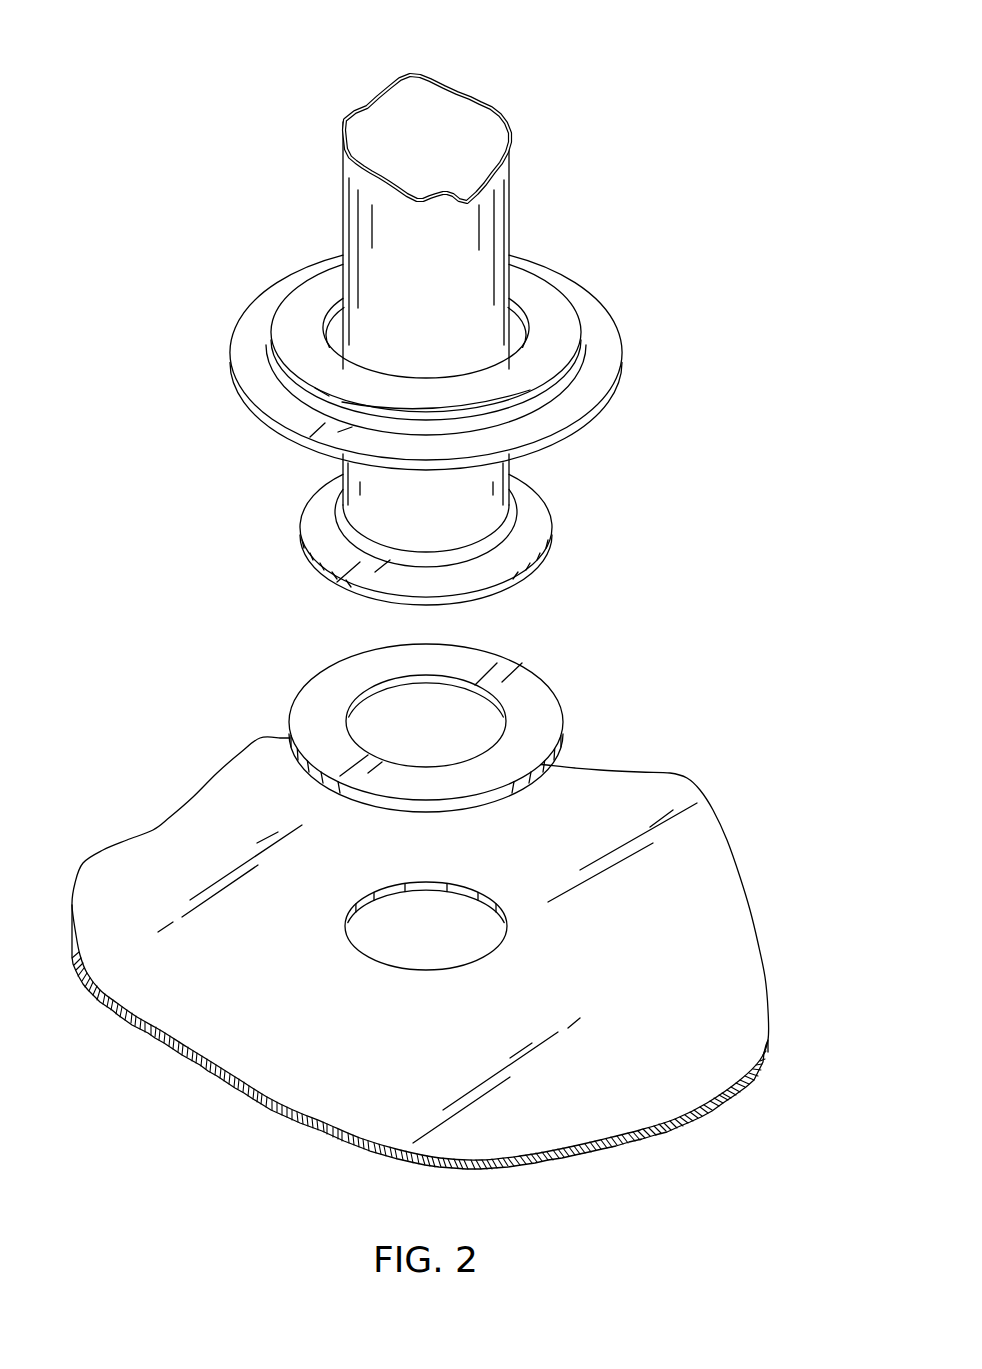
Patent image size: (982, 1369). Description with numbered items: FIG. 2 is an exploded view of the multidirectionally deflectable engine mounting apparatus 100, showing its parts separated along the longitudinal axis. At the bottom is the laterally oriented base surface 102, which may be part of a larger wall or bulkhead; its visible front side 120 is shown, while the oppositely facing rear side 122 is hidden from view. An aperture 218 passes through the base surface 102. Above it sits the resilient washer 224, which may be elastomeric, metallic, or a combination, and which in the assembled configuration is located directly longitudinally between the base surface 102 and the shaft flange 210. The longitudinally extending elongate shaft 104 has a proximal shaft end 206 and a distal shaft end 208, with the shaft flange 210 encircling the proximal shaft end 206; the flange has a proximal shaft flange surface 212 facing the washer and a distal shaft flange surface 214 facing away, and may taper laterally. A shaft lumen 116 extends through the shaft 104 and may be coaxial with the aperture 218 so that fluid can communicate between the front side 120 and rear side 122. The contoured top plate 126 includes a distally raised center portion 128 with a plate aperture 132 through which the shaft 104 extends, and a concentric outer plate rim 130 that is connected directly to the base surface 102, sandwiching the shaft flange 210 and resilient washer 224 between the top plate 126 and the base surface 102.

The multidirectionally deflectable engine mounting apparatus 100 is at (202, 36).
The base surface 102 is at (670, 928).
The elongate shaft 104 is at (530, 206).
The shaft lumen 116 is at (466, 127).
The front side 120 is at (340, 1072).
The rear side 122 is at (596, 1078).
The contoured top plate 126 is at (630, 321).
The center portion 128 is at (552, 318).
The outer plate rim 130 is at (254, 330).
The plate aperture 132 is at (335, 318).
The proximal shaft end 206 is at (298, 512).
The distal shaft end 208 is at (330, 114).
The shaft flange 210 is at (352, 590).
The proximal shaft flange surface 212 is at (508, 587).
The distal shaft flange surface 214 is at (520, 542).
The aperture 218 is at (408, 948).
The resilient washer 224 is at (290, 690).